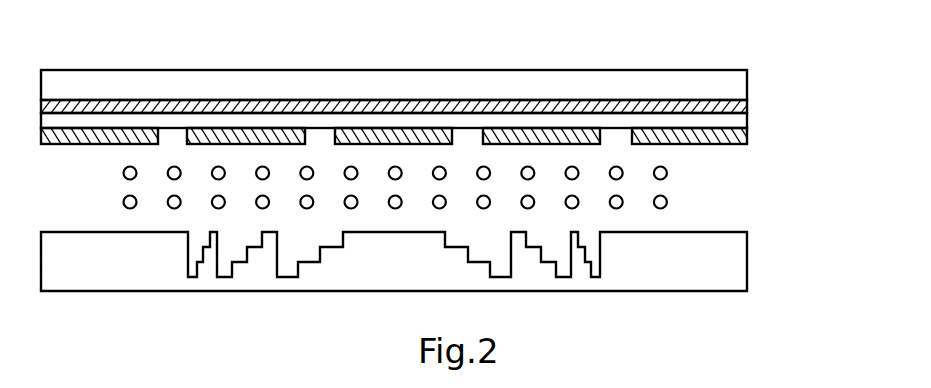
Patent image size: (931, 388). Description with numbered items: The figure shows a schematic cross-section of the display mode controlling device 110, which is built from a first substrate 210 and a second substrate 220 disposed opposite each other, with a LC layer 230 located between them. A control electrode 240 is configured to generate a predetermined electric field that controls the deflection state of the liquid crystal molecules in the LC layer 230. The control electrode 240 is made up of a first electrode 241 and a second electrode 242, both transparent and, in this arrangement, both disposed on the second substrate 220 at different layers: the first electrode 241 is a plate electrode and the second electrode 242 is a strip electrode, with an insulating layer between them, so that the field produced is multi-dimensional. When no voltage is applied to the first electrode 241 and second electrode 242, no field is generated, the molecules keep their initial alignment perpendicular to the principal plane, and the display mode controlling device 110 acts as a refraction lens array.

The display mode controlling device 110 is at (349, 42).
The first substrate 210 is at (748, 262).
The second substrate 220 is at (748, 79).
The LC layer 230 is at (718, 186).
The control electrode 240 is at (464, 122).
The first electrode 241 is at (748, 108).
The second electrode 242 is at (748, 137).